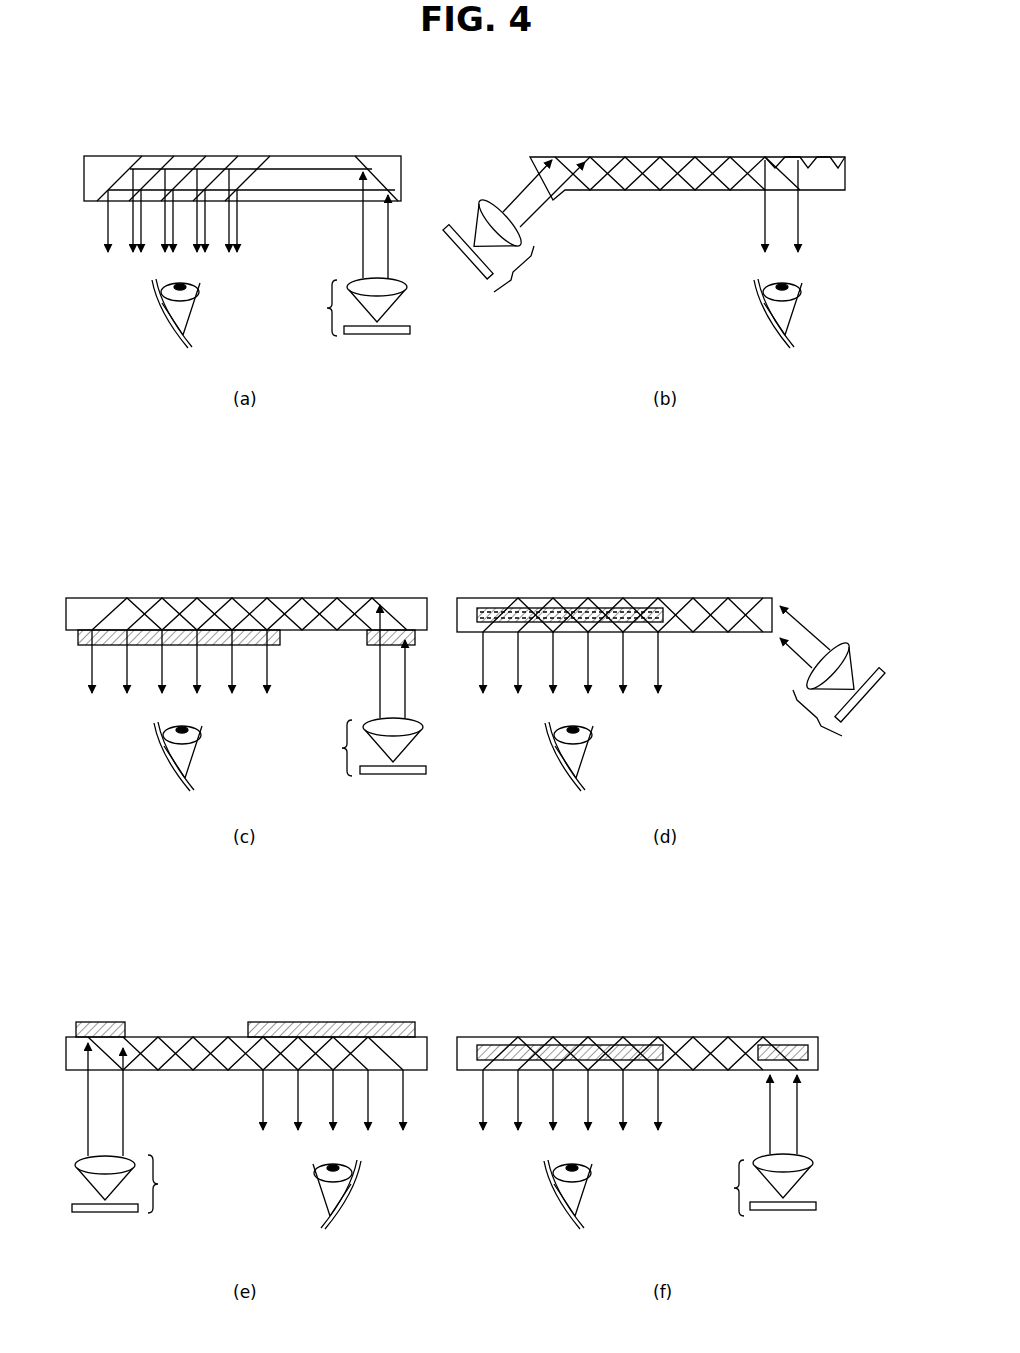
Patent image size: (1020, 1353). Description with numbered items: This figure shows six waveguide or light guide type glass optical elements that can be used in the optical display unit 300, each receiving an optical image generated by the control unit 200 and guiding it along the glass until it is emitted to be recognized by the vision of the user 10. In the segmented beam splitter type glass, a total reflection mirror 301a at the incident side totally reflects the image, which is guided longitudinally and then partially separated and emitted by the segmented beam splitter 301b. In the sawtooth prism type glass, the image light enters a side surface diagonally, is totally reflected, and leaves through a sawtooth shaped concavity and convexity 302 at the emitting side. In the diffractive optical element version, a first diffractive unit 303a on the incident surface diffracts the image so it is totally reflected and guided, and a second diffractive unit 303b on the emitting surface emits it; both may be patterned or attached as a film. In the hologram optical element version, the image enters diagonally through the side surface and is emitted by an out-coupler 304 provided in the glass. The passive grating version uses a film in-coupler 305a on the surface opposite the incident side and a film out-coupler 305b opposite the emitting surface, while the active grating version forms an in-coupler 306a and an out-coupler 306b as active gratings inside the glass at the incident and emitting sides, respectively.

The optical display unit 300 is at (455, 586).
The total reflection mirror 301a is at (378, 162).
The segmented beam splitter 301b is at (200, 155).
The sawtooth shaped concavity and convexity 302 is at (803, 157).
The first diffractive unit 303a is at (372, 646).
The second diffractive unit 303b is at (268, 646).
The out-coupler 304 is at (603, 607).
The in-coupler 305a is at (100, 1022).
The out-coupler 305b is at (335, 1022).
The in-coupler 306a is at (793, 1045).
The out-coupler 306b is at (605, 1045).
The control unit 200 is at (478, 704).
The user 10 is at (451, 754).